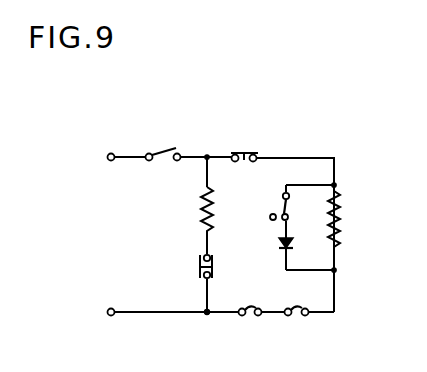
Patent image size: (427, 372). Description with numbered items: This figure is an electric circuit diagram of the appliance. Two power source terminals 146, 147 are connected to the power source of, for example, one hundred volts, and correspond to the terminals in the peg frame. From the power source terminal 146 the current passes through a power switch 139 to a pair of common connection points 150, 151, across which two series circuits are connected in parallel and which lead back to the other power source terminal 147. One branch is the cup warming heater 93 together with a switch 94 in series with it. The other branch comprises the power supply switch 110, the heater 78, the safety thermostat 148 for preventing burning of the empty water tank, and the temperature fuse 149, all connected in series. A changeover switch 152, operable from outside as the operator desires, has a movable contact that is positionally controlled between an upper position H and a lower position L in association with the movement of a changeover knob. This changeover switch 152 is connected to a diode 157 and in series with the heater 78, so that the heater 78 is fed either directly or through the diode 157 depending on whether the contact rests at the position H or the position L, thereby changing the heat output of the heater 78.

The heater 78 is at (339, 217).
The cup warming heater 93 is at (200, 211).
The switch 94 is at (198, 266).
The power supply switch 110 is at (249, 153).
The power switch 139 is at (163, 146).
The power source terminal 146 is at (107, 156).
The power source terminal 147 is at (107, 311).
The safety thermostat 148 is at (295, 317).
The temperature fuse 149 is at (247, 317).
The common connection point 150 is at (208, 155).
The common connection point 151 is at (207, 316).
The changeover switch 152 is at (281, 203).
The diode 157 is at (280, 247).
The lower position L is at (270, 217).
The upper position H is at (290, 218).